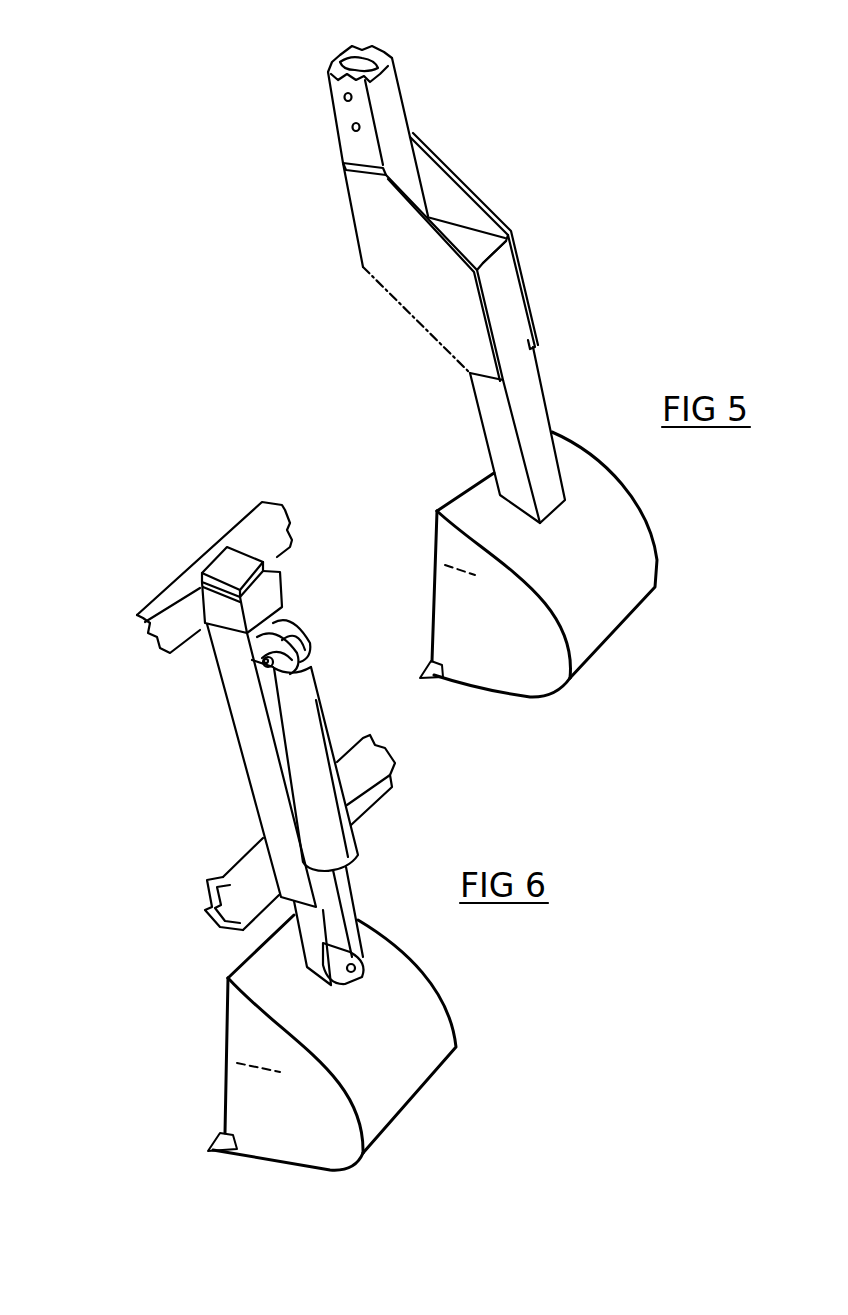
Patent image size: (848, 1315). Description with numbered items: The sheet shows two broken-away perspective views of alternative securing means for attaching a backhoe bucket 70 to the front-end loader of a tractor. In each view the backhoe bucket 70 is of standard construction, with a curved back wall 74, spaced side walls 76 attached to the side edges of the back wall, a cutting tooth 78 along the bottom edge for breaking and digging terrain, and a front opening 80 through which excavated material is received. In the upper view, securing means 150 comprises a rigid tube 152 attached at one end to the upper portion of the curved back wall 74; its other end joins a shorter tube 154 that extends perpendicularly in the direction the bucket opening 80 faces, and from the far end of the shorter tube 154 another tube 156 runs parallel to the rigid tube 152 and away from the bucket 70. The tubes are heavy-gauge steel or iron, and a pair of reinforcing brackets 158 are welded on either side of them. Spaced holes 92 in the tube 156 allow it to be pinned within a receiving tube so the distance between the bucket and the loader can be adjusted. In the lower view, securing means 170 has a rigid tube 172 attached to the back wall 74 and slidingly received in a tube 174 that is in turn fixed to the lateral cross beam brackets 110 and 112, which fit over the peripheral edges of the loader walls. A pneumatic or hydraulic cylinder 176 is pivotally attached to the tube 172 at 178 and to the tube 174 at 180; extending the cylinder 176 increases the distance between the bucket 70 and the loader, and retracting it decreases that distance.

In FIG. 5, the backhoe bucket 70 is at (543, 564).
In FIG. 6, the backhoe bucket 70 is at (335, 1070).
In FIG. 5, the curved back wall 74 is at (590, 574).
In FIG. 6, the curved back wall 74 is at (390, 1040).
In FIG. 5, the side walls 76 is at (507, 638).
In FIG. 6, the side walls 76 is at (309, 1137).
In FIG. 5, the cutting teeth 78 is at (425, 663).
In FIG. 6, the cutting teeth 78 is at (207, 1148).
In FIG. 5, the front opening 80 is at (437, 550).
In FIG. 6, the front opening 80 is at (227, 1060).
In FIG. 5, the holes 92 is at (352, 127).
In FIG. 6, the cross beam bracket 110 is at (220, 877).
In FIG. 6, the cross beam bracket 112 is at (248, 517).
In FIG. 5, the securing means 150 is at (553, 70).
In FIG. 5, the rigid tube 152 is at (545, 390).
In FIG. 5, the shorter tube 154 is at (475, 247).
In FIG. 5, the tube 156 is at (406, 113).
In FIG. 5, the reinforcing brackets 158 is at (465, 185).
In FIG. 6, the securing means 170 is at (143, 546).
In FIG. 6, the rigid tube 172 is at (313, 937).
In FIG. 6, the tube 174 is at (235, 740).
In FIG. 6, the hydraulic cylinder 176 is at (358, 842).
In FIG. 6, the pivot attachment 178 is at (390, 943).
In FIG. 6, the pivot attachment 180 is at (265, 665).